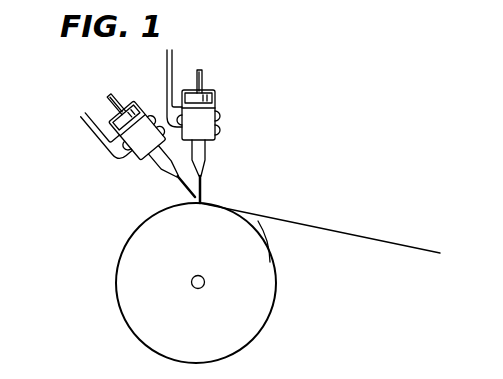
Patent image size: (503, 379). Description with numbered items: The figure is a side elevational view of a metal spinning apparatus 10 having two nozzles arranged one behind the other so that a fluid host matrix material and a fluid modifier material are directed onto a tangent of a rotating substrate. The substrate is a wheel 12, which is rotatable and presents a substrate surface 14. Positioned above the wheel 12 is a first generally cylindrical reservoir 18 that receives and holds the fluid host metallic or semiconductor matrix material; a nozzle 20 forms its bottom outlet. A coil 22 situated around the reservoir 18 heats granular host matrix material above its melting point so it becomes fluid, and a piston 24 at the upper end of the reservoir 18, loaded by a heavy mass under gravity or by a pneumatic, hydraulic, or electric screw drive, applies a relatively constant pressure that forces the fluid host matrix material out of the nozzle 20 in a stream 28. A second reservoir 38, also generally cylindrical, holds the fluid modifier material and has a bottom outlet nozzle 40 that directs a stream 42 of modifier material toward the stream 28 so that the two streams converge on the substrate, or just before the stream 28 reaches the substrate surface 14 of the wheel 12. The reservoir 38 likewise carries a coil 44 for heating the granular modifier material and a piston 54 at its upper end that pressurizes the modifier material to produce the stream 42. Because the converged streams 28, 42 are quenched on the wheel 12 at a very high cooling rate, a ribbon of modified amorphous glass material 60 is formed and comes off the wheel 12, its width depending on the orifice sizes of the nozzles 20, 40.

The metal spinning apparatus 10 is at (289, 194).
The wheel 12 is at (253, 307).
The substrate surface 14 is at (272, 248).
The first generally cylindrical reservoir 18 is at (224, 123).
The nozzle 20 is at (204, 163).
The coil 22 is at (166, 58).
The piston 24 is at (205, 86).
The stream 28 is at (208, 182).
The second reservoir 38 is at (152, 110).
The bottom outlet nozzle 40 is at (150, 182).
The stream 42 is at (185, 189).
The coil 44 is at (96, 126).
The piston 54 is at (133, 103).
The ribbon of modified amorphous glass material 60 is at (347, 232).